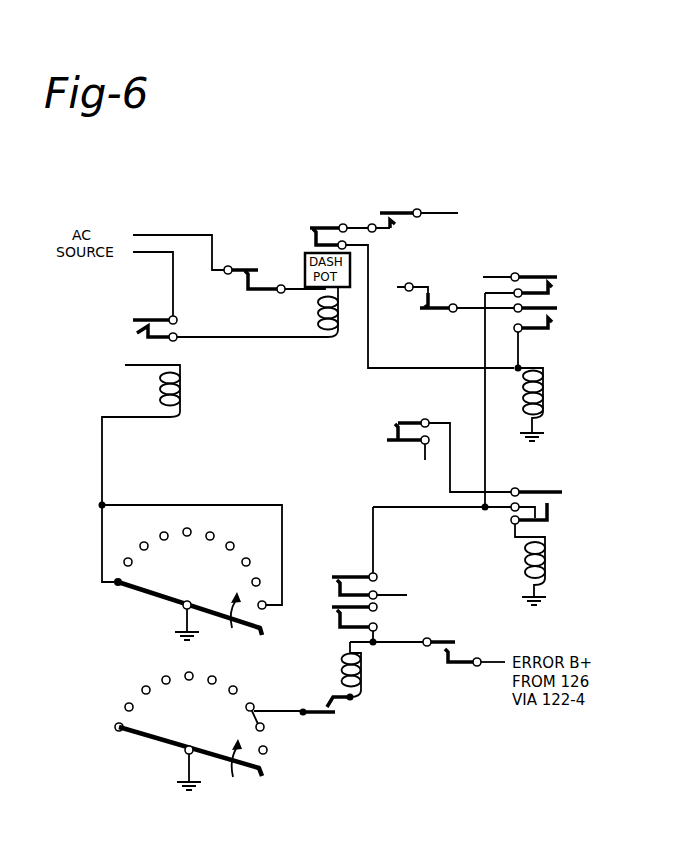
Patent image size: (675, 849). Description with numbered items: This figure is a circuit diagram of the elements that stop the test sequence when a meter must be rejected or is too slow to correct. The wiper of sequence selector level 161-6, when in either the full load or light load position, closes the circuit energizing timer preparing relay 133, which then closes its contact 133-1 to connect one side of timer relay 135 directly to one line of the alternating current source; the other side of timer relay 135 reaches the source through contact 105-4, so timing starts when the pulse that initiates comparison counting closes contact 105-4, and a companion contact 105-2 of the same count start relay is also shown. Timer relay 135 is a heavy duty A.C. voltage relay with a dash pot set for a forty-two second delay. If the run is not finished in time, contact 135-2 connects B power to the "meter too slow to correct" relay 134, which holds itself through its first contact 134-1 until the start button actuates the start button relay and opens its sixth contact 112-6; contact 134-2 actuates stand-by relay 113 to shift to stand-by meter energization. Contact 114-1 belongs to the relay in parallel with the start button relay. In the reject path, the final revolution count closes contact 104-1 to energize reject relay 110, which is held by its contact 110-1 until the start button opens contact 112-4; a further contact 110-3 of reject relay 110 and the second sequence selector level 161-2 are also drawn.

The contact of timer preparing relay 133-1 is at (210, 328).
The contact of count start relay 105-4 is at (274, 279).
The contact of timer relay 135-2 is at (311, 241).
The contact of count start relay 105-2 is at (416, 221).
The timer relay 135 is at (322, 312).
The sixth contact of start button relay 112-6 is at (468, 295).
The contact of excessive error relay 134-2 is at (534, 282).
The first contact of excessive error relay 134-1 is at (560, 340).
The "meter too slow to correct" relay 134 is at (545, 413).
The timer preparing relay 133 is at (180, 393).
The contact of relay 114 114-1 is at (394, 428).
The stand-by relay 113 is at (546, 578).
The contact of reject relay 110-3 is at (381, 555).
The holding contact of reject relay 110-1 is at (393, 624).
The contact of count stop relay 104-1 is at (475, 652).
The reject relay 110 is at (364, 668).
The contact of start button relay 112-4 is at (330, 698).
The sequence selector contact level 161-6 is at (185, 572).
The sequence selector contact level 161-2 is at (207, 731).